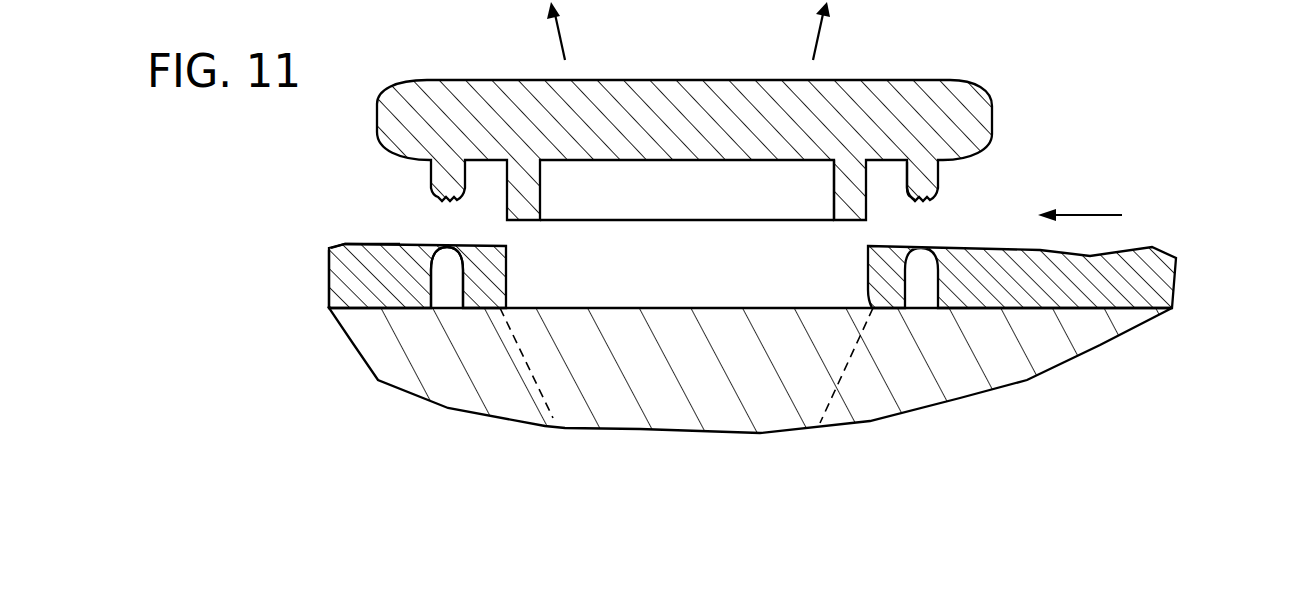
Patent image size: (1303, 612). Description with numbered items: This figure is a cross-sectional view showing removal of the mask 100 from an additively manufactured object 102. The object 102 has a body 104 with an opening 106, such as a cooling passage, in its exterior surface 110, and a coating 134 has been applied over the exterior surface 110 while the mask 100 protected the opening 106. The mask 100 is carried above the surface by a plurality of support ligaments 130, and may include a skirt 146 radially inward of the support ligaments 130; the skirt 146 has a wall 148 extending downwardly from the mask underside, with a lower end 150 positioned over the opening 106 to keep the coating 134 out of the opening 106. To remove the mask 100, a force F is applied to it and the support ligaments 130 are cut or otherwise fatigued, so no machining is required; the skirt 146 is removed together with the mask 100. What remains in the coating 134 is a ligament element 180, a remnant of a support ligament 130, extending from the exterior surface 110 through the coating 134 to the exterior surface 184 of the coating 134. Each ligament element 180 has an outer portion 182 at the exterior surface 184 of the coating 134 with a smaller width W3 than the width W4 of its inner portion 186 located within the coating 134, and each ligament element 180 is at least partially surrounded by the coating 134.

The mask 100 is at (915, 128).
The object 102 is at (690, 370).
The body 104 is at (372, 353).
The opening 106 is at (766, 400).
The exterior surface 110 is at (356, 305).
The support ligaments 130 is at (920, 182).
The coating 134 is at (502, 266).
The skirt 146 is at (843, 185).
The wall 148 is at (680, 184).
The lower end 150 is at (847, 221).
The ligament element 180 is at (437, 318).
The outer portion 182 is at (446, 247).
The exterior surface of coating 184 is at (356, 243).
The inner portion 186 is at (453, 297).
The width of outer portion W3 is at (490, 249).
The slot bottom width W4 is at (390, 293).
The force F is at (566, 30).